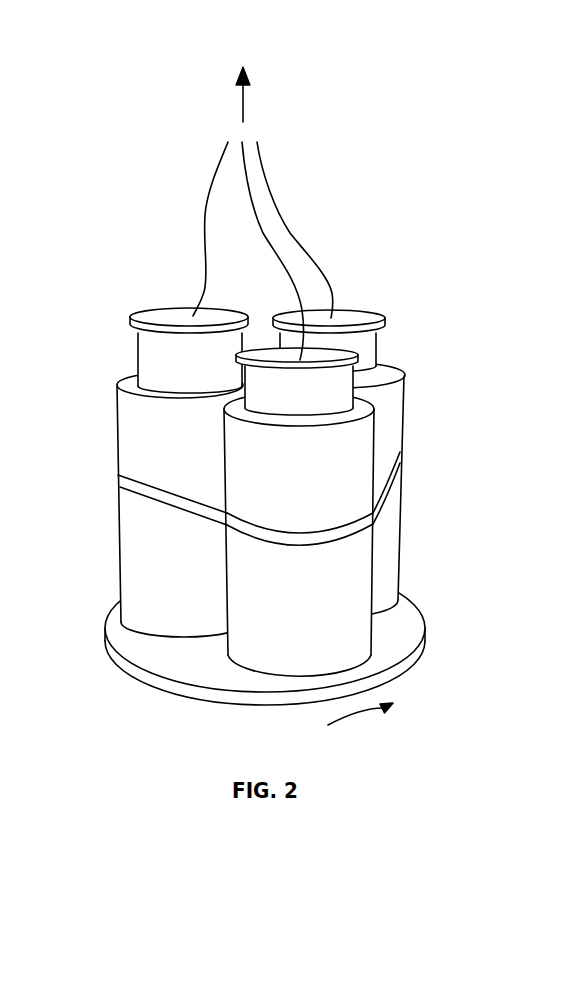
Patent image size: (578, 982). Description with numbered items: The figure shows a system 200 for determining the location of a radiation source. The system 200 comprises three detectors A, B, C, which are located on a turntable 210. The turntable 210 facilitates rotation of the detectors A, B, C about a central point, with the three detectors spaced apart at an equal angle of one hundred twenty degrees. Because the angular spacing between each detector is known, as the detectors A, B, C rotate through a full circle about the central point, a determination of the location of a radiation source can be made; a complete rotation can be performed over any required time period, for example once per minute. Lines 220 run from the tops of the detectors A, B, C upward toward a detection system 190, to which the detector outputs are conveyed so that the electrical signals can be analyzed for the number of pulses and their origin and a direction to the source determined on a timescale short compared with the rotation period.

The detection system 190 is at (365, 94).
The system 200 is at (476, 186).
The turntable 210 is at (130, 638).
The tubing 220 is at (207, 203).
The detector A is at (360, 578).
The detector B is at (147, 423).
The detector C is at (393, 405).